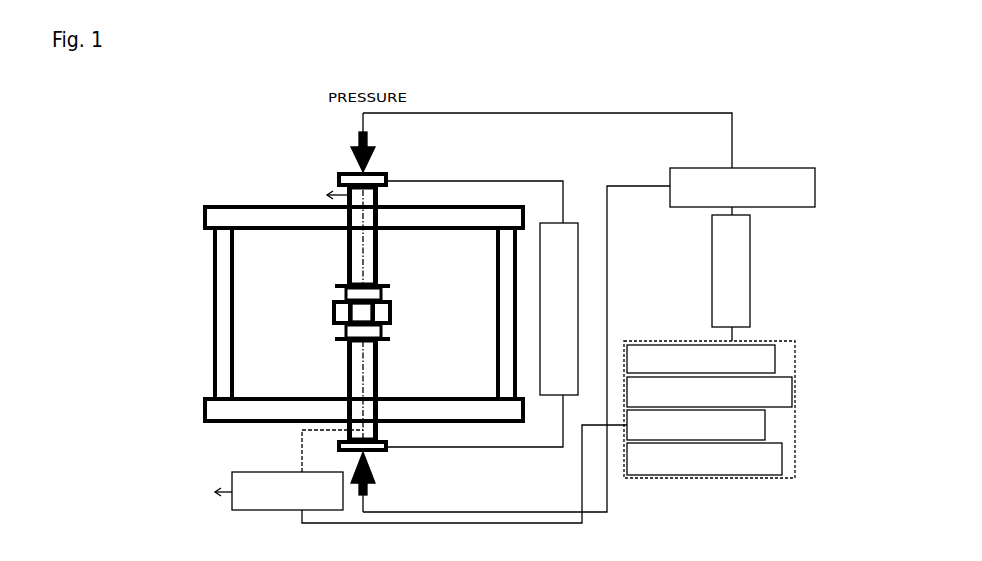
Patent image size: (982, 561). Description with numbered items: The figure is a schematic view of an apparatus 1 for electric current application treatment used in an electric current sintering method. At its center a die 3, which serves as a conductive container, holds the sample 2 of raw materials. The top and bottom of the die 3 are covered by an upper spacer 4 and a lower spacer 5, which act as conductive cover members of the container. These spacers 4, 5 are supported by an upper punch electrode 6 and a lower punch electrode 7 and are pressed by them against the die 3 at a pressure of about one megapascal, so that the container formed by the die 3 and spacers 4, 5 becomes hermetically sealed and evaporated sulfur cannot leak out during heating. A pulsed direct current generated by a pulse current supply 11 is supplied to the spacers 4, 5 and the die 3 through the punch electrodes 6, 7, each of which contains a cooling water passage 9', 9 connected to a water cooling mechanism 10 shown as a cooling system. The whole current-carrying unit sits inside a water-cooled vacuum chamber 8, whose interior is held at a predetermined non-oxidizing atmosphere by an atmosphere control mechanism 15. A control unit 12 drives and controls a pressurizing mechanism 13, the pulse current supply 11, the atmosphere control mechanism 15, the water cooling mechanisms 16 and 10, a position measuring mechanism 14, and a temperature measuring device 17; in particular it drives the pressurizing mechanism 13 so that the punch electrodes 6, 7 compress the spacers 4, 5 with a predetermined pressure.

The apparatus for electric current application treatment 1 is at (285, 295).
The sample 2 is at (360, 312).
The die 3 is at (378, 309).
The upper spacer 4 is at (362, 295).
The lower spacer 5 is at (363, 330).
The upper punch electrode 6 is at (357, 273).
The lower punch electrode 7 is at (357, 352).
The water-cooled vacuum chamber 8 is at (223, 363).
The cooling water passage 9 is at (309, 390).
The cooling water passage 9' is at (309, 237).
The water cooling mechanism 10 is at (287, 491).
The pulse current supply 11 is at (561, 309).
The control unit 12 is at (733, 271).
The pressurizing mechanism 13 is at (742, 187).
The position measuring mechanism 14 is at (701, 359).
The atmosphere control mechanism 15 is at (709, 392).
The water cooling mechanism 16 is at (696, 425).
The temperature measuring device 17 is at (704, 459).